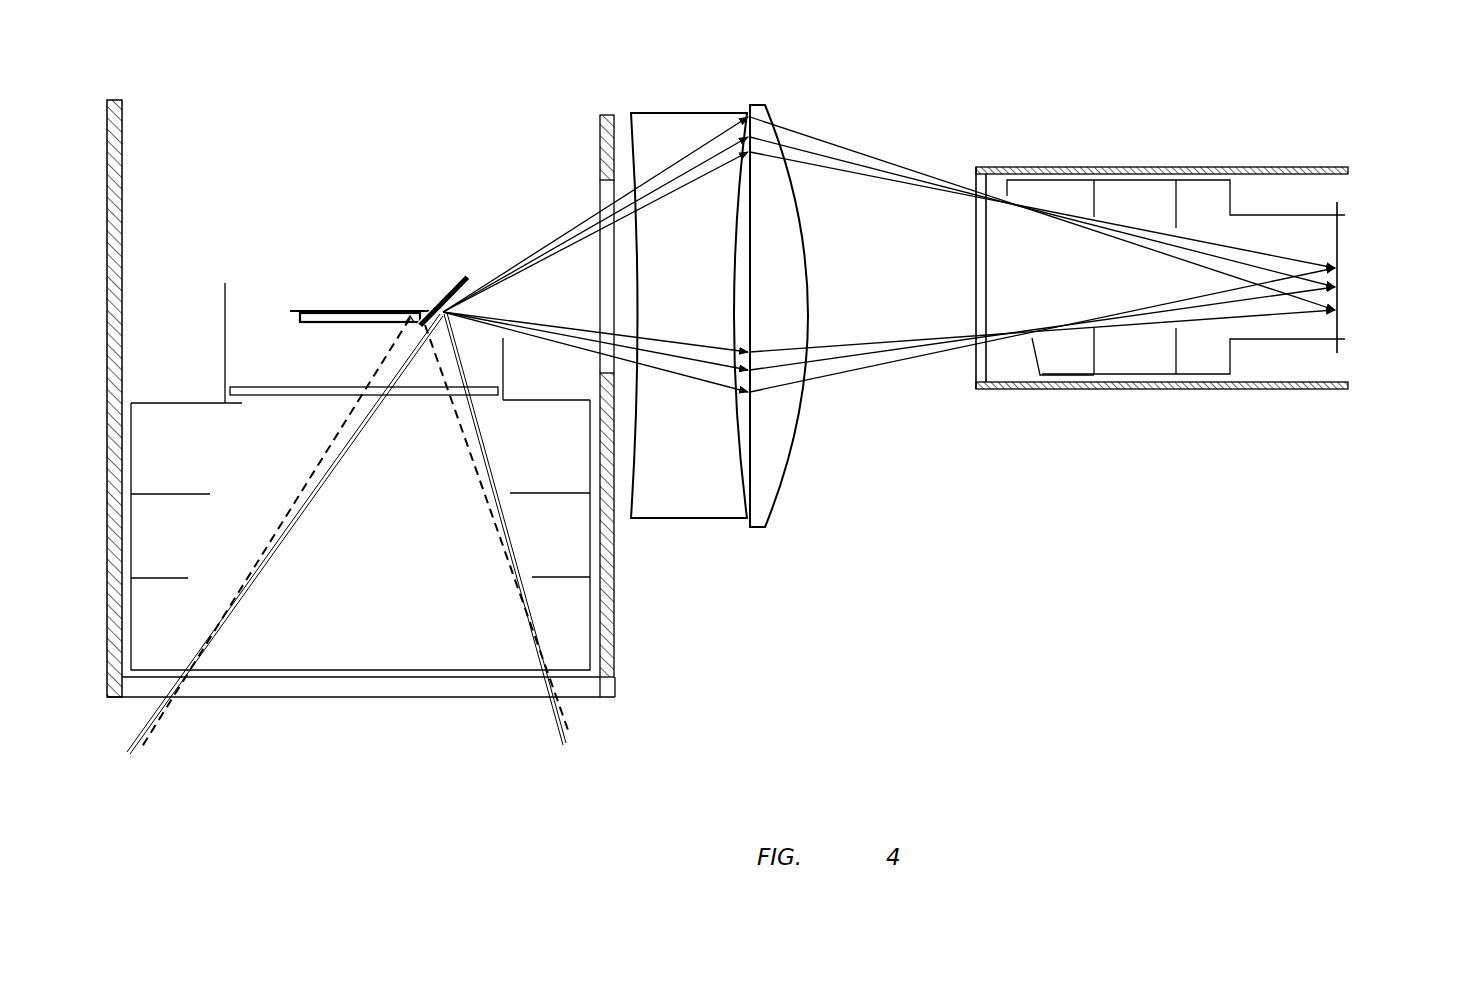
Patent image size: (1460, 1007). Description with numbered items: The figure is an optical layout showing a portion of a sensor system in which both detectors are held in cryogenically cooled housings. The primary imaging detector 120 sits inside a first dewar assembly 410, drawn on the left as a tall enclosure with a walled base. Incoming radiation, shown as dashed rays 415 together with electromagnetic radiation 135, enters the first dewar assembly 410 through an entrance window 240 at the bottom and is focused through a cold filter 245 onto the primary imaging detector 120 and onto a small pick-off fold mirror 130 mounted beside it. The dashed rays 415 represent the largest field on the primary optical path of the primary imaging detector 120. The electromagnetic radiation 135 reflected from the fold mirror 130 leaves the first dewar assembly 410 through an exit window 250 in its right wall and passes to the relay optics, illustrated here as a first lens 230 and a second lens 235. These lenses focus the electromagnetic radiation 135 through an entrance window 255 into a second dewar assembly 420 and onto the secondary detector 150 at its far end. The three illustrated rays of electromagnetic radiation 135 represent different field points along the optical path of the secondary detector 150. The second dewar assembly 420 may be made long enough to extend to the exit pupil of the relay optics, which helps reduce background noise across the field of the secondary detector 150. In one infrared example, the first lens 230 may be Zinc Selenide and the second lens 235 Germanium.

The primary imaging detector 120 is at (341, 308).
The fold mirror 130 is at (462, 282).
The electromagnetic radiation 135 is at (875, 152).
The secondary detector 150 is at (1340, 242).
The first lens 230 is at (690, 113).
The second lens 235 is at (768, 105).
The entrance window 240 is at (503, 697).
The cold filter 245 is at (293, 397).
The exit window 250 is at (600, 190).
The entrance window 255 is at (975, 218).
The first dewar assembly 410 is at (558, 580).
The dashed rays 415 is at (303, 484).
The second dewar assembly 420 is at (1093, 357).